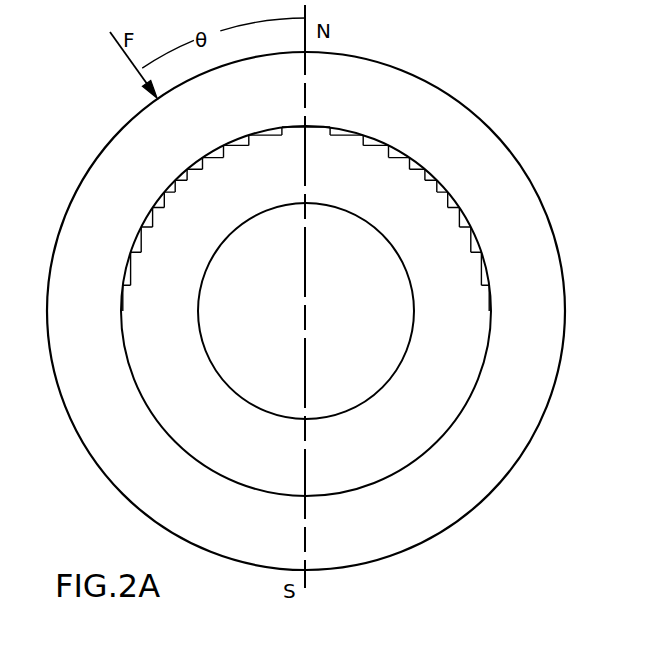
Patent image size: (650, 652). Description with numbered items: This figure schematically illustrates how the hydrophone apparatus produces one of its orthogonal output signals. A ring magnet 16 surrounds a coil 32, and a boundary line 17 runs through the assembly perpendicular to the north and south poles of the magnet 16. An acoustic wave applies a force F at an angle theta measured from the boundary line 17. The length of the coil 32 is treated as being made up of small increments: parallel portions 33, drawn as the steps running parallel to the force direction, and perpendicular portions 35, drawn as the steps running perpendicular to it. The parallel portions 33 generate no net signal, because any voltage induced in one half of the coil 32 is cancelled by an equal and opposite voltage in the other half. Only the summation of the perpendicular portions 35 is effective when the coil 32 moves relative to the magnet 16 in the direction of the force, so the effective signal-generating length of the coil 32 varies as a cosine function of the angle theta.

The magnet 16 is at (462, 133).
The boundary line 17 is at (305, 88).
The coil 32 is at (490, 277).
The parallel portions of the coil length 33 is at (205, 166).
The perpendicular portions of the coil length 35 is at (168, 197).